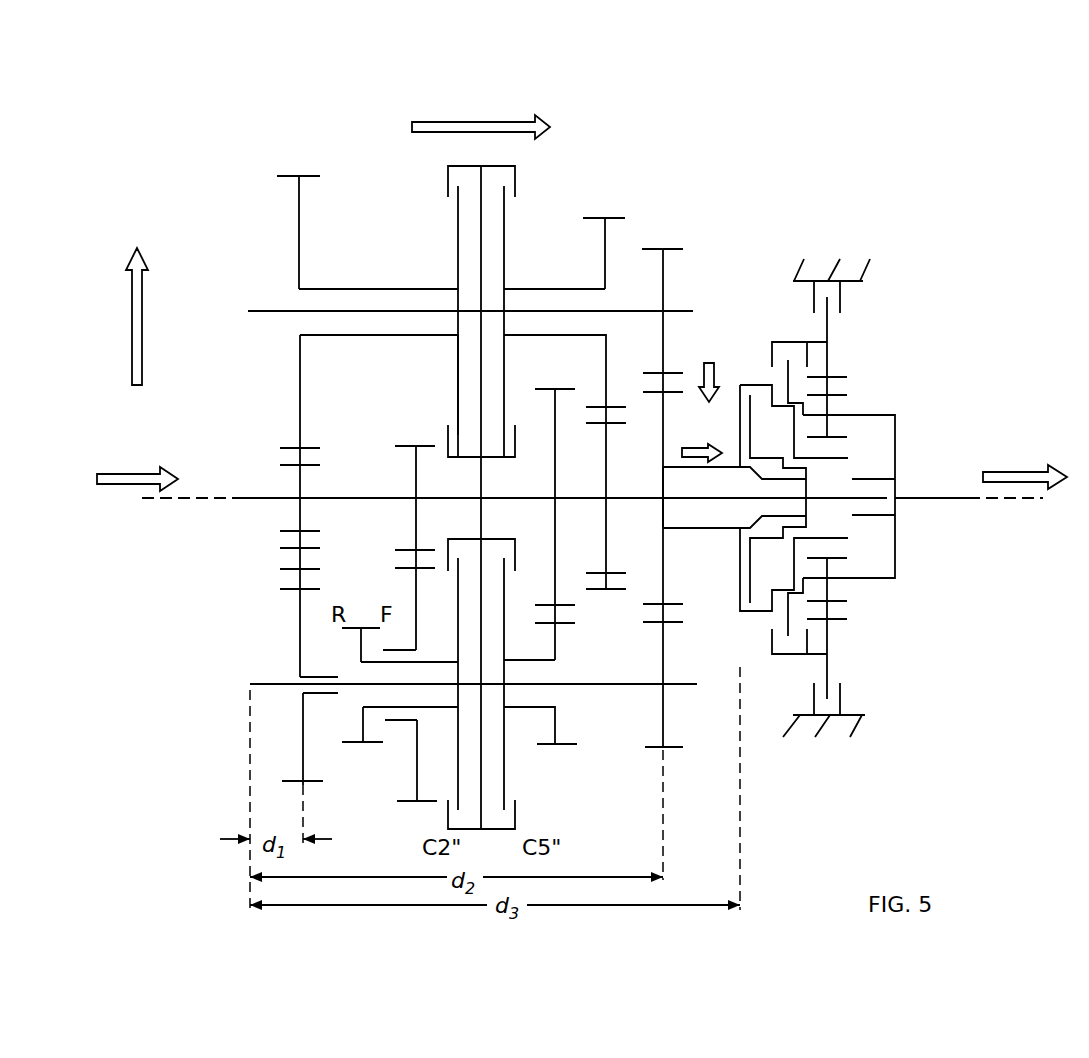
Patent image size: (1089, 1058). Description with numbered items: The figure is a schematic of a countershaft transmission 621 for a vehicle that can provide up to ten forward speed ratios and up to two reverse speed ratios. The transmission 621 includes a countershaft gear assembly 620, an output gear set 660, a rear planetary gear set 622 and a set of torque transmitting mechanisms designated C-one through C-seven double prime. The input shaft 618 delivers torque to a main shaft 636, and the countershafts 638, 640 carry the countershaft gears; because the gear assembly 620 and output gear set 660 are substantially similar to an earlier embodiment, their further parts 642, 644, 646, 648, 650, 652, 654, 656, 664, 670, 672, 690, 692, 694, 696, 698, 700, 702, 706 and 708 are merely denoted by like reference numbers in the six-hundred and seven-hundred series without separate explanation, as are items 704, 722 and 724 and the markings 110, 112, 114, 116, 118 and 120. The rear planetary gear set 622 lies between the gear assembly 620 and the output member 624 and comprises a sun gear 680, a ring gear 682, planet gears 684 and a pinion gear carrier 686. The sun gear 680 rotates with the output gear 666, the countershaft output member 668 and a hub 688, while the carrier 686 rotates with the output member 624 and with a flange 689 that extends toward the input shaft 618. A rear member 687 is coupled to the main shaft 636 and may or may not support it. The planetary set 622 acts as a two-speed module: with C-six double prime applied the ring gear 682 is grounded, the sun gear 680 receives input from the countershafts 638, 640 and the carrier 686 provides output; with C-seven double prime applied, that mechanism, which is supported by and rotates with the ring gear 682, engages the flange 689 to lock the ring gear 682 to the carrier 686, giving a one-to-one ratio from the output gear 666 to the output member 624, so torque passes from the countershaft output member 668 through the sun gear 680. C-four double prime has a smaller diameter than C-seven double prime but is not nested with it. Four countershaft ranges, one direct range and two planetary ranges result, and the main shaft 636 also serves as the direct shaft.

The engine input arrow 110 is at (128, 473).
The vertical direction arrow 112 is at (132, 340).
The forward direction arrow 114 is at (470, 122).
The downward direction arrow 116 is at (723, 363).
The direction arrow 118 is at (700, 462).
The output direction arrow 120 is at (1020, 470).
The input shaft 618 is at (258, 496).
The countershaft gear assembly 620 is at (345, 148).
The countershaft transmission 621 is at (988, 155).
The rear planetary gear set 622 is at (845, 225).
The output member 624 is at (935, 496).
The main shaft 636 is at (485, 497).
The countershaft 638 is at (254, 684).
The countershaft 640 is at (270, 310).
The input shaft 642 is at (302, 496).
The gear 644 is at (414, 460).
The gear shaft 646 is at (553, 472).
The gear shaft 648 is at (600, 483).
The gear 650 is at (302, 749).
The gear 652 is at (362, 724).
The gear 654 is at (416, 570).
The gear 656 is at (557, 724).
The output gear set 660 is at (677, 225).
The intermediate shaft 664 is at (662, 273).
The output gear 666 is at (662, 439).
The countershaft output member 668 is at (700, 529).
The clutch bracket 670 is at (300, 234).
The clutch bracket 672 is at (605, 233).
The sun gear 680 is at (840, 458).
The ring gear 682 is at (852, 498).
The planet gears 684 is at (828, 408).
The pinion gear carrier 686 is at (880, 414).
The rear member 687 is at (880, 515).
The hub 688 is at (738, 413).
The flange 689 is at (788, 374).
The gear 690 is at (408, 720).
The gear 692 is at (443, 662).
The bracket 694 is at (535, 663).
The bracket 696 is at (378, 289).
The bracket 698 is at (524, 289).
The reverse/forward shifter 700 is at (317, 677).
The gear 702 is at (282, 569).
The ground 704 is at (865, 272).
The carrier 706 is at (288, 388).
The shaft 708 is at (655, 486).
The input axis 722 is at (171, 502).
The output axis 724 is at (1011, 502).